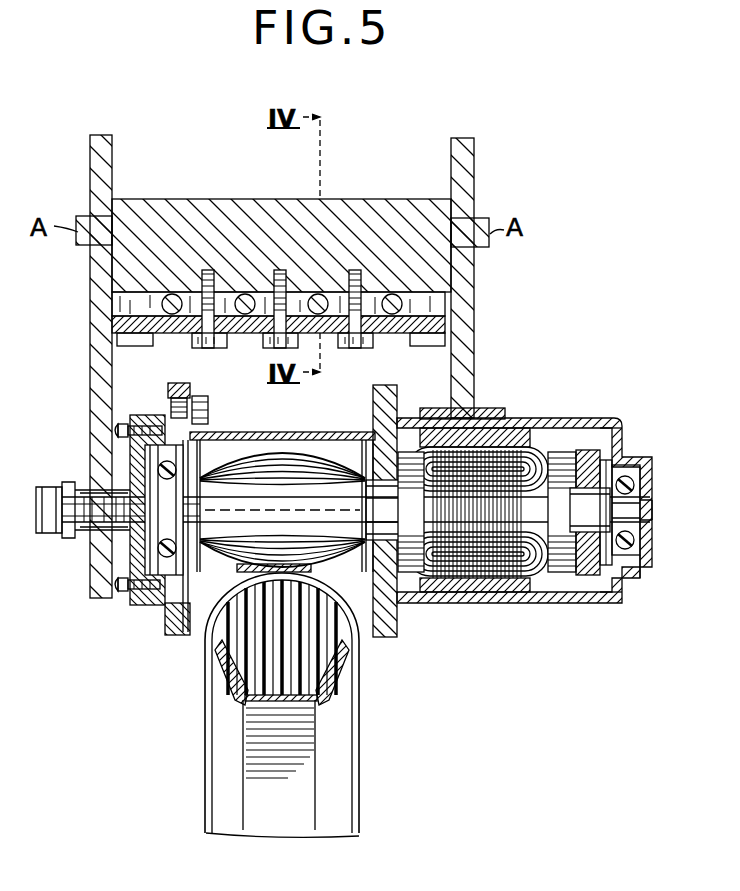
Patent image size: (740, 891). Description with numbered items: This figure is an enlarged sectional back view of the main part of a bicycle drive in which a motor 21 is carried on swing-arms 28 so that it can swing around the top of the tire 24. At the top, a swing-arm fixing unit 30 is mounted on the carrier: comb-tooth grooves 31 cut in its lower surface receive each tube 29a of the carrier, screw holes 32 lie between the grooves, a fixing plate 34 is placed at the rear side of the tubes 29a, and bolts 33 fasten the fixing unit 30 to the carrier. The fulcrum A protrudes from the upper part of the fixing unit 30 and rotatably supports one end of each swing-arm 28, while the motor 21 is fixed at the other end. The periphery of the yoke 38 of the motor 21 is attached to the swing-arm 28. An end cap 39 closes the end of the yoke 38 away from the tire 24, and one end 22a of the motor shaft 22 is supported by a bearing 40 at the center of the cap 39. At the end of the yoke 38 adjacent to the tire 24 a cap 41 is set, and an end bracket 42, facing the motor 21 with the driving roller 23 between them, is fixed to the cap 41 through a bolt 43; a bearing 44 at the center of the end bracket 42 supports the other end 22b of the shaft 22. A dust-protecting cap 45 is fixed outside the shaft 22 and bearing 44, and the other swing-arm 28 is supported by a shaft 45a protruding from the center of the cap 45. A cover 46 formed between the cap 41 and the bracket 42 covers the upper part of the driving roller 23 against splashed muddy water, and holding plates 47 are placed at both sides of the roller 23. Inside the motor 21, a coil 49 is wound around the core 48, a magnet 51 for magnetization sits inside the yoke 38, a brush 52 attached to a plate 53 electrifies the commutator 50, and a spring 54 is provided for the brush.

The motor 21 is at (541, 509).
The motor shaft 22 is at (412, 603).
The one end of the motor shaft 22a is at (596, 604).
The another end of the motor shaft 22b is at (130, 572).
The driving roller 23 is at (296, 484).
The tire 24 is at (345, 641).
The swing-arm 28 is at (100, 163).
The tube 29a is at (440, 303).
The swing-arm fixing unit 30 is at (371, 198).
The groove 31 is at (418, 328).
The screw hole 32 is at (186, 338).
The bolt 33 is at (262, 340).
The fixing plate 34 is at (388, 328).
The yoke 38 is at (520, 424).
The end cap 39 is at (642, 483).
The bearing 40 is at (645, 566).
The cap 41 is at (376, 404).
The end bracket 42 is at (172, 395).
The bolt 43 is at (208, 413).
The bearing 44 is at (164, 598).
The cap 45 is at (122, 460).
The shaft 45a is at (48, 496).
The cover 46 is at (258, 432).
The holding plate 47 is at (200, 636).
The core 48 is at (496, 594).
The coil 49 is at (534, 592).
The commutator 50 is at (585, 468).
The magnet 51 is at (455, 594).
The brush 52 is at (620, 451).
The plate 53 is at (622, 594).
The spring 54 is at (616, 426).